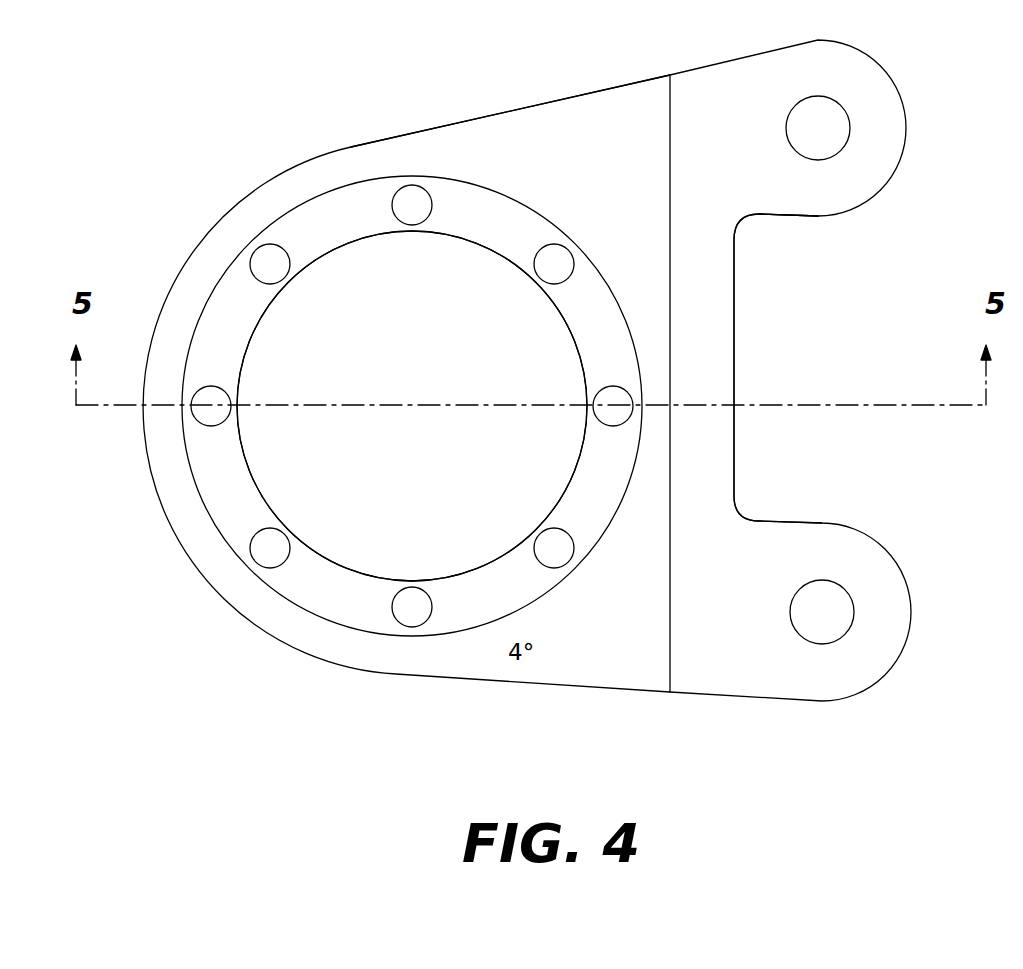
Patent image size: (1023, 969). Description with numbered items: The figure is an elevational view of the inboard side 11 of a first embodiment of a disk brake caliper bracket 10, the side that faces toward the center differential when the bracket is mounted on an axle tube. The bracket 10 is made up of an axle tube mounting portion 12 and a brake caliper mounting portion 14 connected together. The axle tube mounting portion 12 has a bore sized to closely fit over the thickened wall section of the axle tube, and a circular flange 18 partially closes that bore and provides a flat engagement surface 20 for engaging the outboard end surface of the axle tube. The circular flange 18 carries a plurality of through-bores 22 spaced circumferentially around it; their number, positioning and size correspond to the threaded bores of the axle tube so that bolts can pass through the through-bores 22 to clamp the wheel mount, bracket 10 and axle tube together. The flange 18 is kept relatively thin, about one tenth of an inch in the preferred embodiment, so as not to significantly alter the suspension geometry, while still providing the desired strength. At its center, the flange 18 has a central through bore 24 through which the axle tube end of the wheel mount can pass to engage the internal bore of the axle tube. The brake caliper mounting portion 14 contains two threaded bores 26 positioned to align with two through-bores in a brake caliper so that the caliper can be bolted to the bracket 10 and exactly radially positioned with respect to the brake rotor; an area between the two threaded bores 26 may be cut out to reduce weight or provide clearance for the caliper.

The disk brake caliper bracket 10 is at (616, 80).
The inboard side 11 is at (710, 369).
The axle tube mounting portion 12 is at (480, 135).
The brake caliper mounting portion 14 is at (752, 198).
The circular flange 18 is at (483, 237).
The flat engagement surface 20 is at (348, 232).
The through-bores 22 is at (565, 230).
The central through bore 24 is at (578, 337).
The threaded bores 26 is at (848, 104).